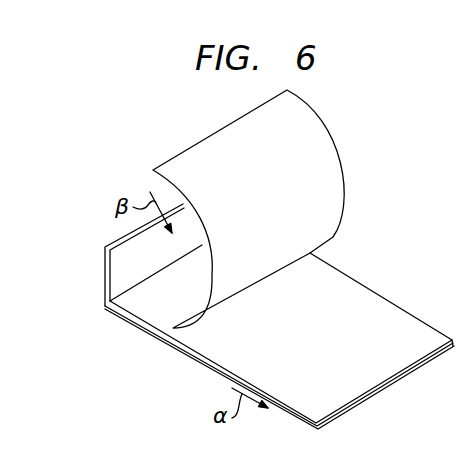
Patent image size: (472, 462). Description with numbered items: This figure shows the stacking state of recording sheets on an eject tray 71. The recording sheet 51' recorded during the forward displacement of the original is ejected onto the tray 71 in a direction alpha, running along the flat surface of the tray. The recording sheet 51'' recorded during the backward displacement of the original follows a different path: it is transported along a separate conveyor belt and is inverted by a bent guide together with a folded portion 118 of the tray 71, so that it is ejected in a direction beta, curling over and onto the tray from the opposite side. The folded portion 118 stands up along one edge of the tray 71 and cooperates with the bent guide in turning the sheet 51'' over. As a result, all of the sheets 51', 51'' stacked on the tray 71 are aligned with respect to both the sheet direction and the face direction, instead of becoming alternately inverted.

The folded portion 118 is at (110, 268).
The tray 71 is at (193, 353).
The recording sheet recorded during forward displacement 51' is at (281, 332).
The recording sheet recorded during backward displacement 51'' is at (274, 209).